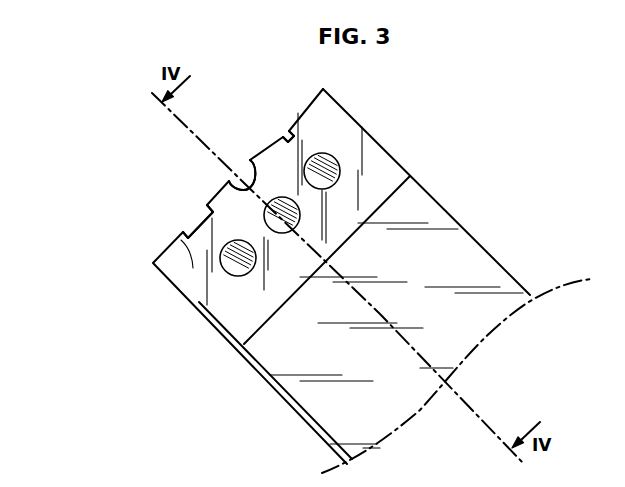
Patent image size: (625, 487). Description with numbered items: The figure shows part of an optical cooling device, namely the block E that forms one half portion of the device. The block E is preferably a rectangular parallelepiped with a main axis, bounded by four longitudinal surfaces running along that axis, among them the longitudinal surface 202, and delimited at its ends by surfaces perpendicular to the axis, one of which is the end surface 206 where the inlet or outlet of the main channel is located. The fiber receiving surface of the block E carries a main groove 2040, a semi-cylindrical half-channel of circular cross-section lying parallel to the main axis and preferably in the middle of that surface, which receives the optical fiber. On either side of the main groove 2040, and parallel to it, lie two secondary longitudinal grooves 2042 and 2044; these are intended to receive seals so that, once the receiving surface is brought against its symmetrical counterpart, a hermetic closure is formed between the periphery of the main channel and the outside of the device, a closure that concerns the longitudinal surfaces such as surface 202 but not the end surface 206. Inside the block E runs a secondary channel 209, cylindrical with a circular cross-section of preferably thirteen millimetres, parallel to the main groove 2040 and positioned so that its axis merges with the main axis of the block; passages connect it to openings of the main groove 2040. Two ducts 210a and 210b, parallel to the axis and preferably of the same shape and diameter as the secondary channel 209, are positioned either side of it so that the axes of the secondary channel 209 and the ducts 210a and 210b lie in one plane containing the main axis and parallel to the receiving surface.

The longitudinal surface 202 is at (334, 345).
The end surface 206 is at (175, 237).
The secondary channel 209 is at (299, 216).
The duct 210a is at (340, 176).
The duct 210b is at (242, 272).
The main groove 2040 is at (241, 188).
The secondary longitudinal groove 2042 is at (281, 134).
The secondary longitudinal groove 2044 is at (205, 223).
The block E is at (458, 266).